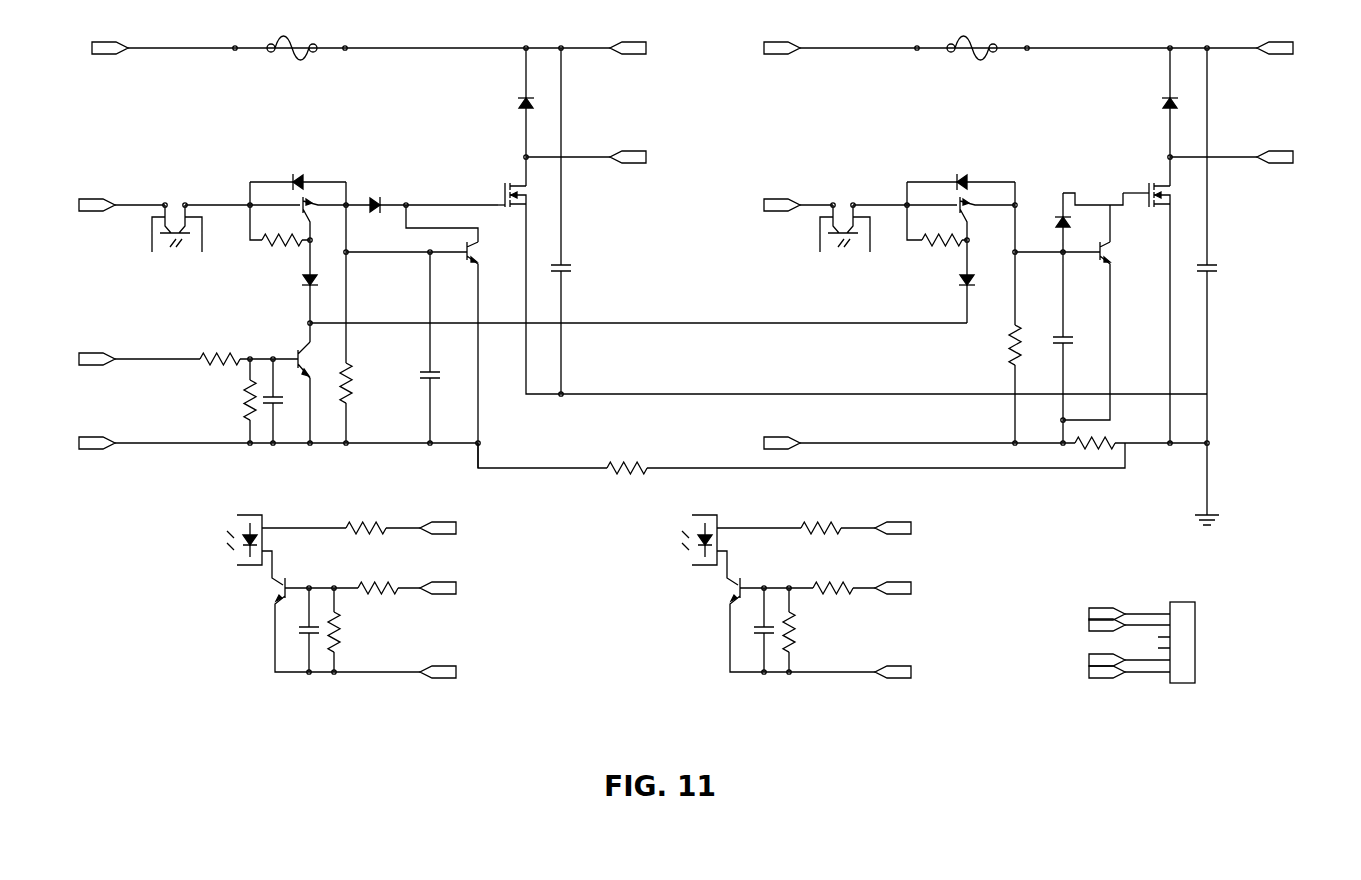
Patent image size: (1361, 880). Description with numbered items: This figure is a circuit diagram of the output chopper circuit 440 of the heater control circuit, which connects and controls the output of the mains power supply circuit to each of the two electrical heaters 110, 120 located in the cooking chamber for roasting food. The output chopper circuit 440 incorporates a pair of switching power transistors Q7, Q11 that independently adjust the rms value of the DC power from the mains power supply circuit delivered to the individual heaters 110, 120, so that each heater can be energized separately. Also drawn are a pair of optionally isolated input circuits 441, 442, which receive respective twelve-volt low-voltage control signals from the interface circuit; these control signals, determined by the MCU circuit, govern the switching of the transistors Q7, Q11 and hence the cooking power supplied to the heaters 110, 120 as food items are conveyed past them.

The electrical heater 110 is at (617, 250).
The electrical heater 120 is at (1036, 276).
The switching power transistor Q7 is at (533, 191).
The switching power transistor Q11 is at (1178, 194).
The output chopper circuit 440 is at (642, 608).
The optionally isolated input circuit 441 is at (524, 682).
The optionally isolated input circuit 442 is at (970, 684).